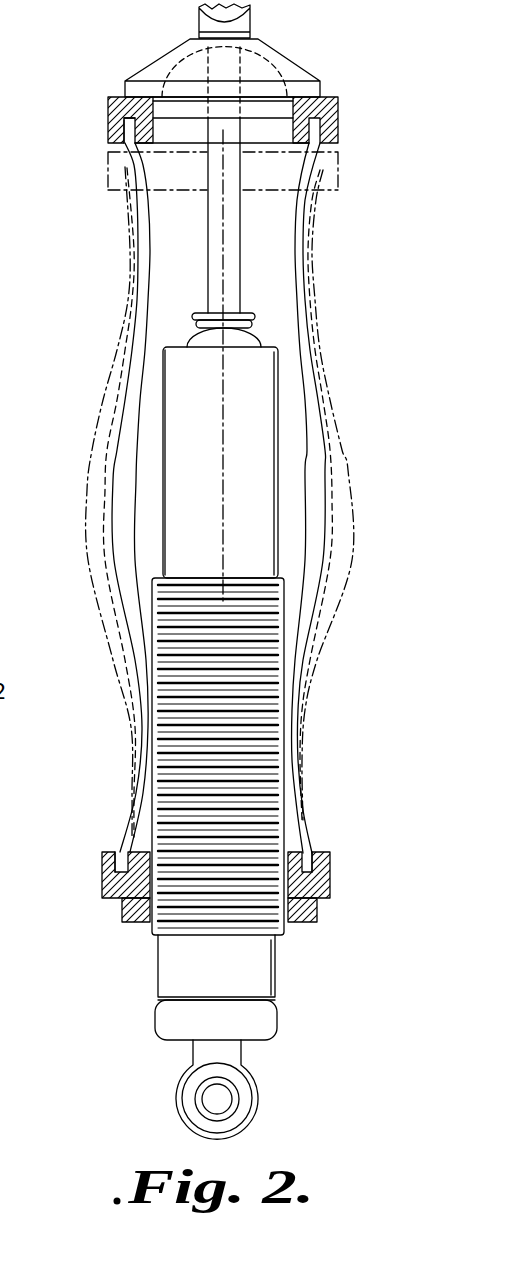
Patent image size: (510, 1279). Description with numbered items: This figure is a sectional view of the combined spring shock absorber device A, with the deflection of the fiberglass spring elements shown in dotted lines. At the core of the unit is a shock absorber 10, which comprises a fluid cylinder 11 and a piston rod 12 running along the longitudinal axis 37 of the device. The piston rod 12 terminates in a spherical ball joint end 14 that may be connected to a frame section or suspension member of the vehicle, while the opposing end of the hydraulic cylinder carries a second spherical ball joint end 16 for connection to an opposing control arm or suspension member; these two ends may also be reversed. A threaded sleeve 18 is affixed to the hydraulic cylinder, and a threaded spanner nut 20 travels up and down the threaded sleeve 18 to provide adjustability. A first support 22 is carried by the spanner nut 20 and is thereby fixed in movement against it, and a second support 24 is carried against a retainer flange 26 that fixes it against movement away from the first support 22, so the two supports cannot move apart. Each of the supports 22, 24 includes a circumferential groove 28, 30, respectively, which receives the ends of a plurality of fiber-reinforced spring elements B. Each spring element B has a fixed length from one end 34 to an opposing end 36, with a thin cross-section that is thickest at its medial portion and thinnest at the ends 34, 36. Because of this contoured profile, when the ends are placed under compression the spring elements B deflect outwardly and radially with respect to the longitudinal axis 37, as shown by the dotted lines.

The shock absorber 10 is at (279, 454).
The fluid cylinder 11 is at (279, 528).
The piston rod 12 is at (240, 270).
The spherical ball joint end 14 is at (252, 10).
The second spherical ball joint end 16 is at (258, 1100).
The threaded sleeve 18 is at (286, 636).
The threaded spanner nut 20 is at (317, 912).
The first support 22 is at (330, 888).
The second support 24 is at (338, 126).
The retainer flange 26 is at (152, 63).
The circumferential groove 28 is at (324, 854).
The circumferential groove 30 is at (123, 132).
The end of spring element 34 is at (122, 852).
The opposing end of spring element 36 is at (123, 120).
The longitudinal axis of the device 37 is at (217, 470).
The combined spring shock absorber device A is at (104, 333).
The fiber-reinforced spring element B is at (311, 372).